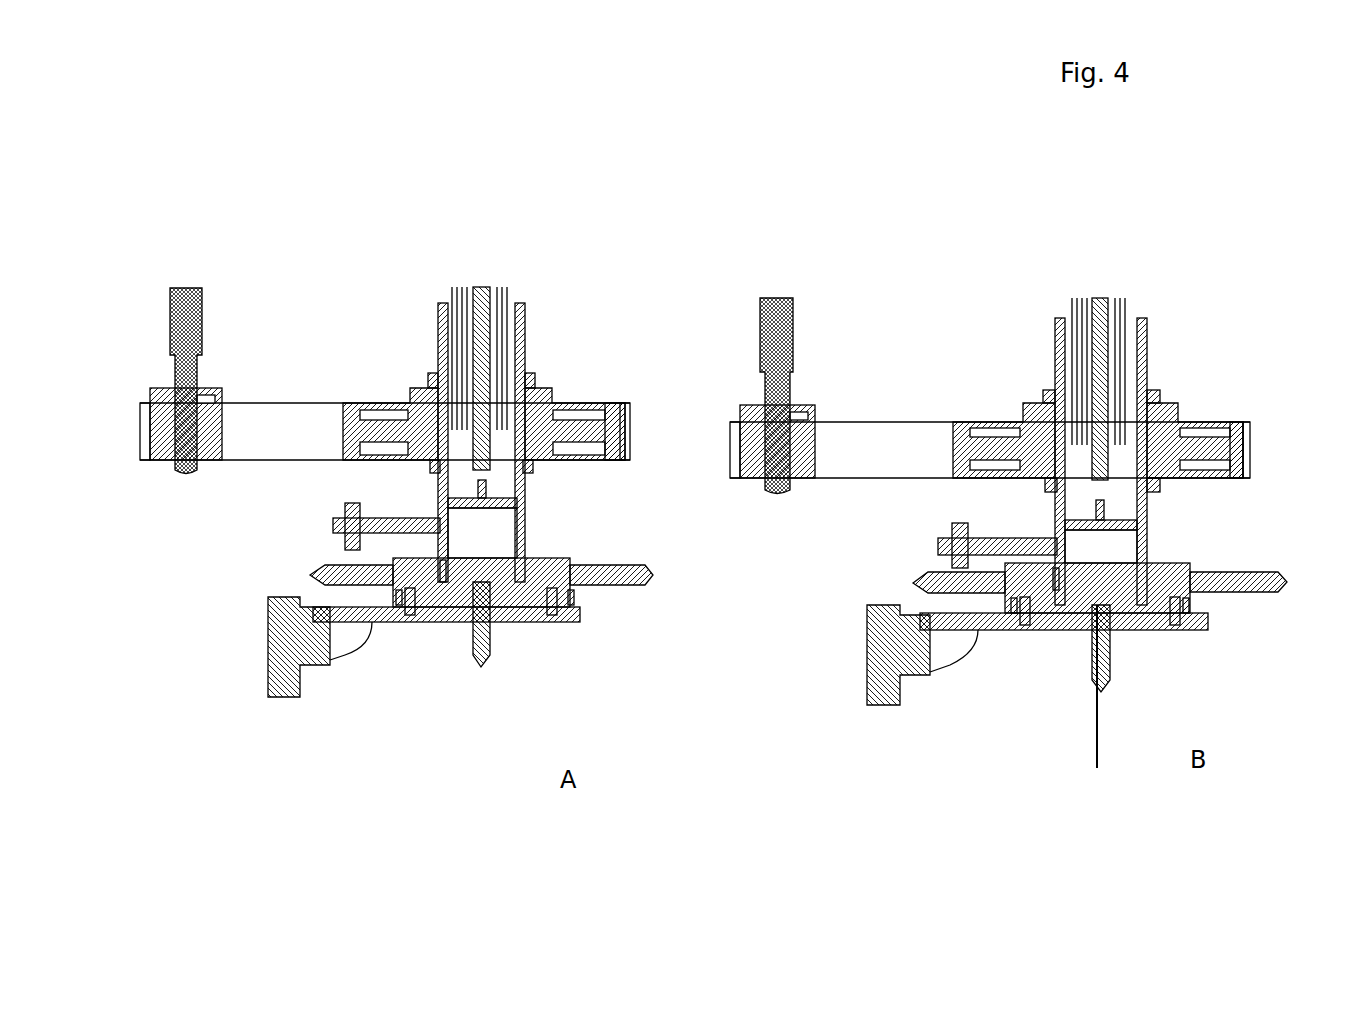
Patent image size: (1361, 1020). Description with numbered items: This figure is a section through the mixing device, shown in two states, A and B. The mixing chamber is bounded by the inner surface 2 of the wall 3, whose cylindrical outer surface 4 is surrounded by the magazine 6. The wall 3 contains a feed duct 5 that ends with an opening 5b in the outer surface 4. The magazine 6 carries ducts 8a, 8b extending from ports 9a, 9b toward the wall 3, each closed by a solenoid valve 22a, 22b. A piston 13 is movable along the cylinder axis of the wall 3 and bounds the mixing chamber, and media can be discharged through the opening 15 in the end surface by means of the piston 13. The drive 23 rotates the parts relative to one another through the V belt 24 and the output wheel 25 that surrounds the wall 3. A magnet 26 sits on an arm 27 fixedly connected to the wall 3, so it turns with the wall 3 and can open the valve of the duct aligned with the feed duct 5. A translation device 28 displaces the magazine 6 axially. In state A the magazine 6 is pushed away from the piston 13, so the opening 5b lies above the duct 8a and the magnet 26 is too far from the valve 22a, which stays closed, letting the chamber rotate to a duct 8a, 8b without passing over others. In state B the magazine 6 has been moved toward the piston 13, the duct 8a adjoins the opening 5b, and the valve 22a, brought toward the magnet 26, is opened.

The inner surface 2 is at (1253, 543).
The wall 3 is at (1180, 523).
The cylindrical outer surface 4 is at (1210, 503).
The feed duct 5 is at (1130, 693).
The opening 5b is at (1093, 720).
The magazine 6 is at (1300, 553).
The duct 8a is at (1037, 698).
The duct 8b is at (1190, 687).
The port 9a is at (985, 720).
The port 9b is at (1262, 667).
The piston 13 is at (1143, 430).
The opening 15 is at (1098, 695).
The solenoid valve 22a is at (913, 585).
The solenoid valve 22b is at (1310, 617).
The drive 23 is at (780, 357).
The belt 24 is at (893, 430).
The output wheel 25 is at (1242, 437).
The magnet 26 is at (955, 523).
The arm 27 is at (1017, 543).
The translation device 28 is at (893, 640).